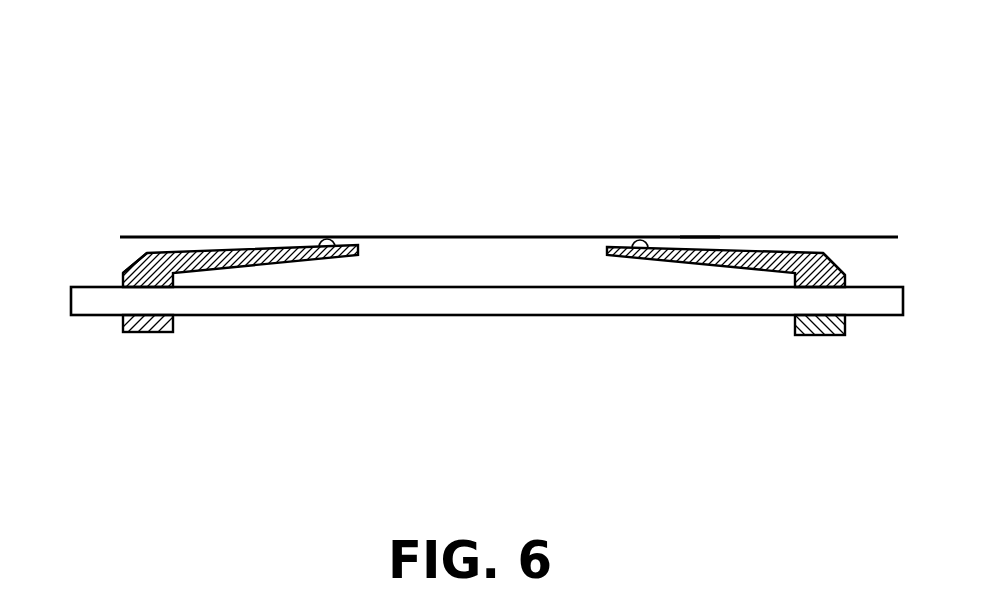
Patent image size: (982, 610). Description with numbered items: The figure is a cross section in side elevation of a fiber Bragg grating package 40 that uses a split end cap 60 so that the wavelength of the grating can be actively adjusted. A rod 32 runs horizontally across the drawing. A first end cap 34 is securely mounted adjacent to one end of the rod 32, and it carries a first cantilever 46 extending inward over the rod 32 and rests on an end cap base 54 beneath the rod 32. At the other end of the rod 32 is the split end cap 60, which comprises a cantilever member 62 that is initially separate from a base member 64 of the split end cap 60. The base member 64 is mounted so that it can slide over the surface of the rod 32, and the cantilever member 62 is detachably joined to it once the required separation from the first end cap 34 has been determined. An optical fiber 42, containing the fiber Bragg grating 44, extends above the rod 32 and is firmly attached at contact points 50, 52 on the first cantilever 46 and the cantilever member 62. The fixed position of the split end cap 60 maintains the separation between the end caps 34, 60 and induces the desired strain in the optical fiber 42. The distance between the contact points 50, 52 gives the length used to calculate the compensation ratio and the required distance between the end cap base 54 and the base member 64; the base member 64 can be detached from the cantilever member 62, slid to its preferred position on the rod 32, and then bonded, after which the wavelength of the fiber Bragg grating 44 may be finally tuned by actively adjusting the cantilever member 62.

The rod 32 is at (482, 300).
The first end cap 34 is at (832, 247).
The fiber grating package 40 is at (755, 104).
The optical fiber 42 is at (697, 236).
The fiber Bragg grating 44 is at (506, 236).
The first cantilever 46 is at (752, 253).
The contact point 50 is at (640, 236).
The contact point 52 is at (327, 236).
The end cap base 54 is at (817, 335).
The split end cap 60 is at (95, 250).
The cantilever member 62 is at (238, 250).
The base member 64 is at (152, 332).